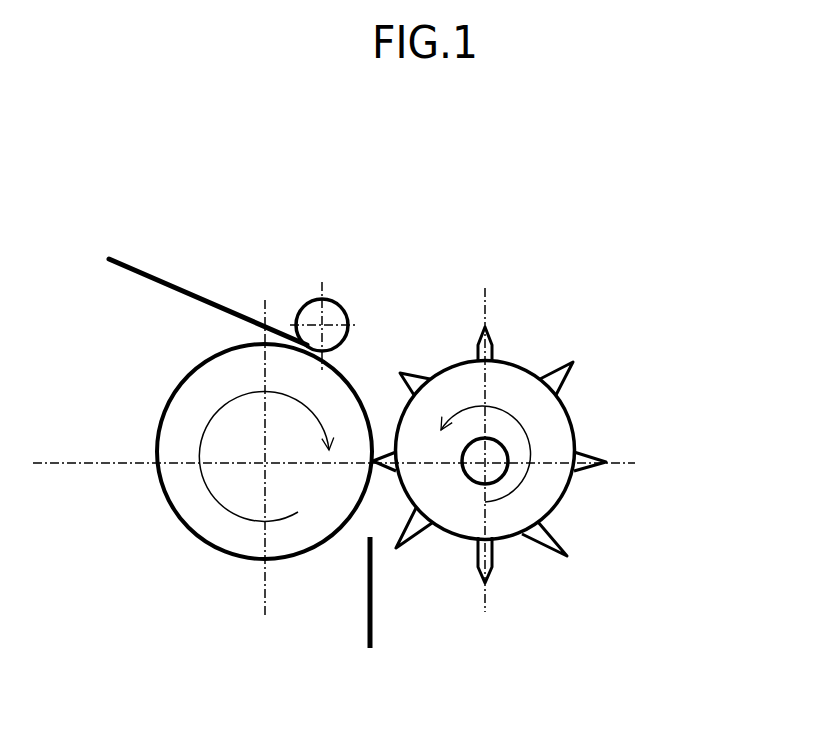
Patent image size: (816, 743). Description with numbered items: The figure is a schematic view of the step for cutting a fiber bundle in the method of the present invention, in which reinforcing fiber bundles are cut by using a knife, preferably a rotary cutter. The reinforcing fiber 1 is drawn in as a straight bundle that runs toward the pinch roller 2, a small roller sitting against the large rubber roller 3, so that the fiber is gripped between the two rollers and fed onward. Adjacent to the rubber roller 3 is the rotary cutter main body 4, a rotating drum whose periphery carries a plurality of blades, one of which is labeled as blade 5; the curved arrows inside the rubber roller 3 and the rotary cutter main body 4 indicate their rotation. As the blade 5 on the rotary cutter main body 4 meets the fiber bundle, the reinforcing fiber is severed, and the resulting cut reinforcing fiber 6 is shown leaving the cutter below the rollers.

The reinforcing fiber 1 is at (157, 263).
The pinch roller 2 is at (330, 300).
The rubber roller 3 is at (203, 532).
The rotary cutter main body 4 is at (517, 382).
The blade 5 is at (557, 553).
The cut reinforcing fiber 6 is at (372, 625).